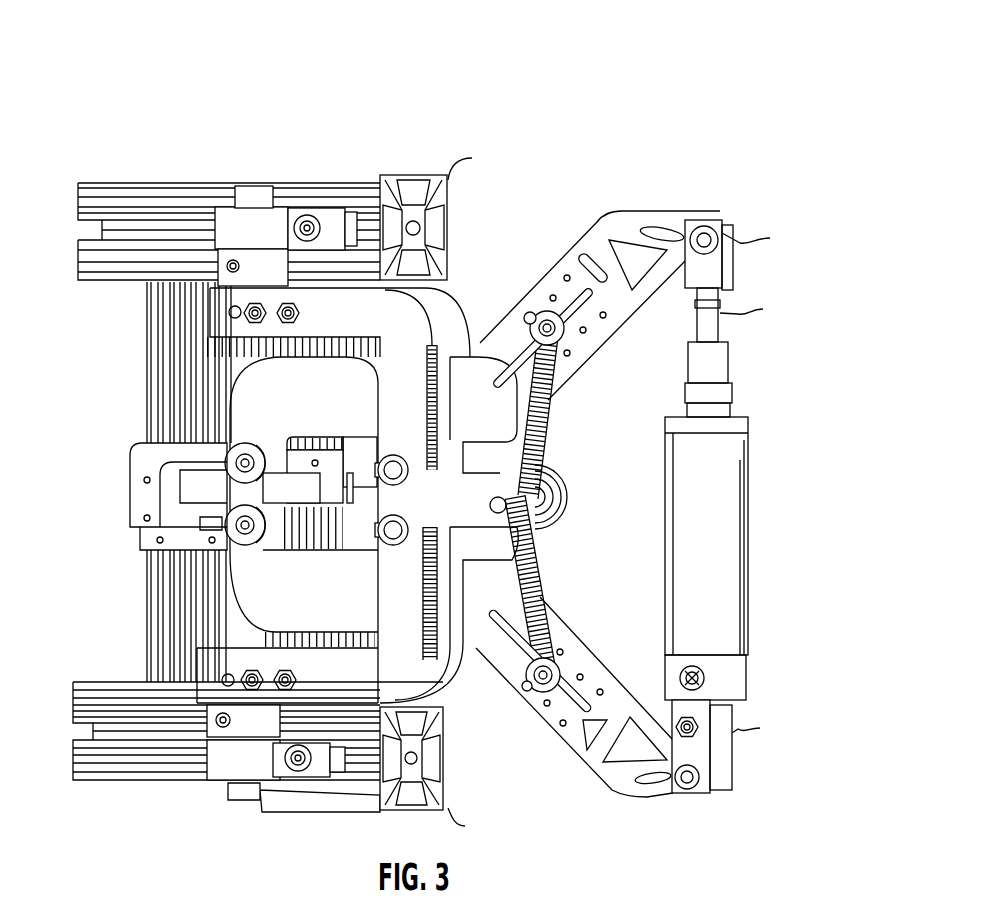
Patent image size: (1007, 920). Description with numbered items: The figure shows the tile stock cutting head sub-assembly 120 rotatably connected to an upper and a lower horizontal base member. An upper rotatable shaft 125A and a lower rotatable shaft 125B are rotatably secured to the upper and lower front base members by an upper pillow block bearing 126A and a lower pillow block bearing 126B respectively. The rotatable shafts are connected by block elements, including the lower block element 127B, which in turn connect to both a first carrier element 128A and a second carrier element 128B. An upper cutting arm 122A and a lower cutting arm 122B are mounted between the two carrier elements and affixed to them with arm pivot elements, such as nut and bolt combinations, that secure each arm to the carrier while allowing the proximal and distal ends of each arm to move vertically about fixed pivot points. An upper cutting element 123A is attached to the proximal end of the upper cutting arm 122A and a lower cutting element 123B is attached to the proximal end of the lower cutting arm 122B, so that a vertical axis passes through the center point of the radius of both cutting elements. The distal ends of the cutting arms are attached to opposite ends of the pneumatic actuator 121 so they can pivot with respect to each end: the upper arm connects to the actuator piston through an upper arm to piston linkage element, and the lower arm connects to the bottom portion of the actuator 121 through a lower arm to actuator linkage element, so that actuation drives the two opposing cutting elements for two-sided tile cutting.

The tile stock cutting head sub-assembly 120 is at (410, 93).
The pneumatic actuator 121 is at (750, 522).
The upper cutting arm 122A is at (687, 213).
The lower cutting arm 122B is at (647, 797).
The upper cutting element 123A is at (252, 442).
The lower cutting element 123B is at (253, 547).
The upper rotatable shaft 125A is at (260, 186).
The lower rotatable shaft 125B is at (260, 790).
The upper pillow block bearing 126A is at (222, 206).
The lower pillow block bearing 126B is at (228, 783).
The lower block element 127B is at (214, 728).
The first carrier element 128A is at (426, 320).
The second carrier element 128B is at (420, 292).